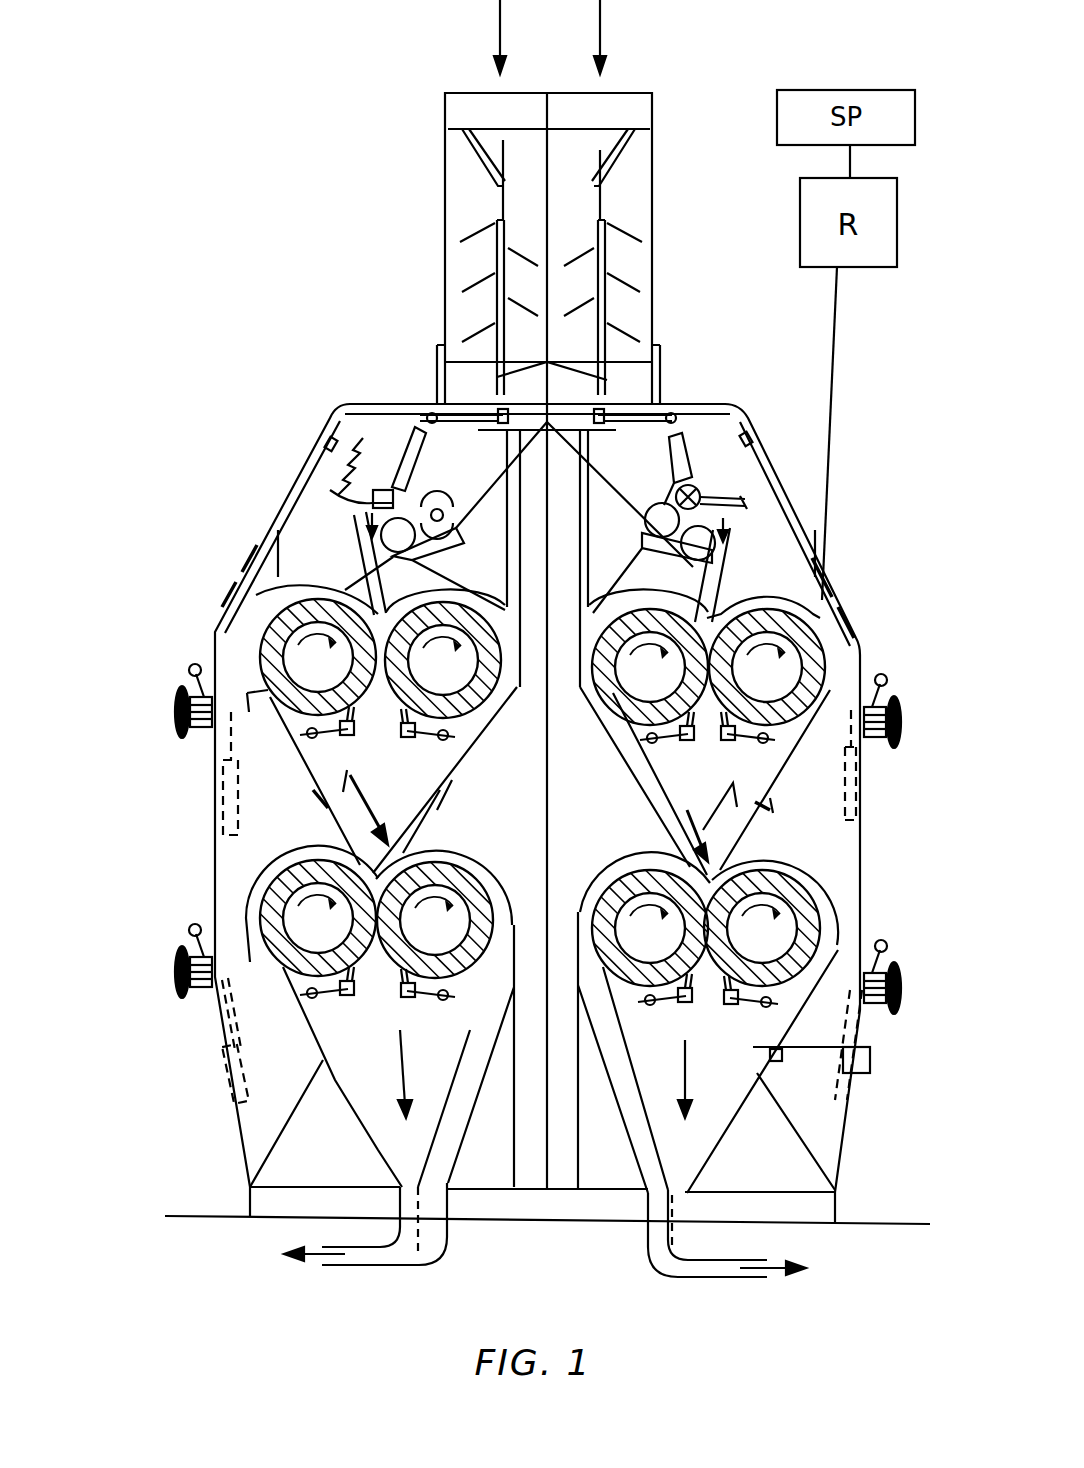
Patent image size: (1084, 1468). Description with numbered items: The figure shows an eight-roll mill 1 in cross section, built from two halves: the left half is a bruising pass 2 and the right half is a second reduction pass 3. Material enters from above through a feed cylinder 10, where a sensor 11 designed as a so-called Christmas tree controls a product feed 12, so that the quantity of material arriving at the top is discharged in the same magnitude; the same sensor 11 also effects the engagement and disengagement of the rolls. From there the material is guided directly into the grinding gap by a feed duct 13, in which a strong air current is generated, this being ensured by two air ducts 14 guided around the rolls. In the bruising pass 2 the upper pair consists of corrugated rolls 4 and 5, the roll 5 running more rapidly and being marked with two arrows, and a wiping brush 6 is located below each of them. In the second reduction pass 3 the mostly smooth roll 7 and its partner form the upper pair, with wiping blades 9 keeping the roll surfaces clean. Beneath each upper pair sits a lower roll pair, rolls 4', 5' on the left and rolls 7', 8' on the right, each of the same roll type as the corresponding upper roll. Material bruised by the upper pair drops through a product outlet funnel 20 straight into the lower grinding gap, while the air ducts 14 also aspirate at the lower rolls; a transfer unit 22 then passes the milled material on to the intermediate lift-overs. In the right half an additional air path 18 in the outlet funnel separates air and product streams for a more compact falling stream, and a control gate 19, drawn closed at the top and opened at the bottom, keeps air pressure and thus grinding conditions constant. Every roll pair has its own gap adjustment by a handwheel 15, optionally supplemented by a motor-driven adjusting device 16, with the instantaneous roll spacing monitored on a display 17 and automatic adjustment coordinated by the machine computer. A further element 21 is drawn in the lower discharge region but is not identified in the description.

The eight-roll mill 1 is at (228, 519).
The bruising pass 2 is at (162, 662).
The second reduction pass 3 is at (896, 686).
The corrugated roll 4 is at (445, 689).
The lower roll 4' is at (437, 939).
The corrugated roll 5 is at (316, 682).
The lower roll 5' is at (318, 945).
The wiping brush 6 is at (345, 735).
The smooth roll 7 is at (646, 686).
The lower roll 7' is at (648, 887).
The lower roll 8' is at (823, 797).
The wiping blade 9 is at (690, 757).
The feed cylinder 10 is at (640, 200).
The sensor 11 is at (600, 278).
The product feed 12 is at (668, 500).
The feed duct 13 is at (680, 597).
The air duct 14 is at (292, 855).
The handwheel 15 is at (172, 733).
The motor-driven adjusting device 16 is at (260, 1090).
The display 17 is at (244, 565).
The air path 18 is at (642, 1145).
The control gate 19 is at (872, 1060).
The product outlet funnel 20 is at (455, 797).
The discharge hopper 21 is at (880, 1128).
The transfer unit 22 is at (372, 1262).